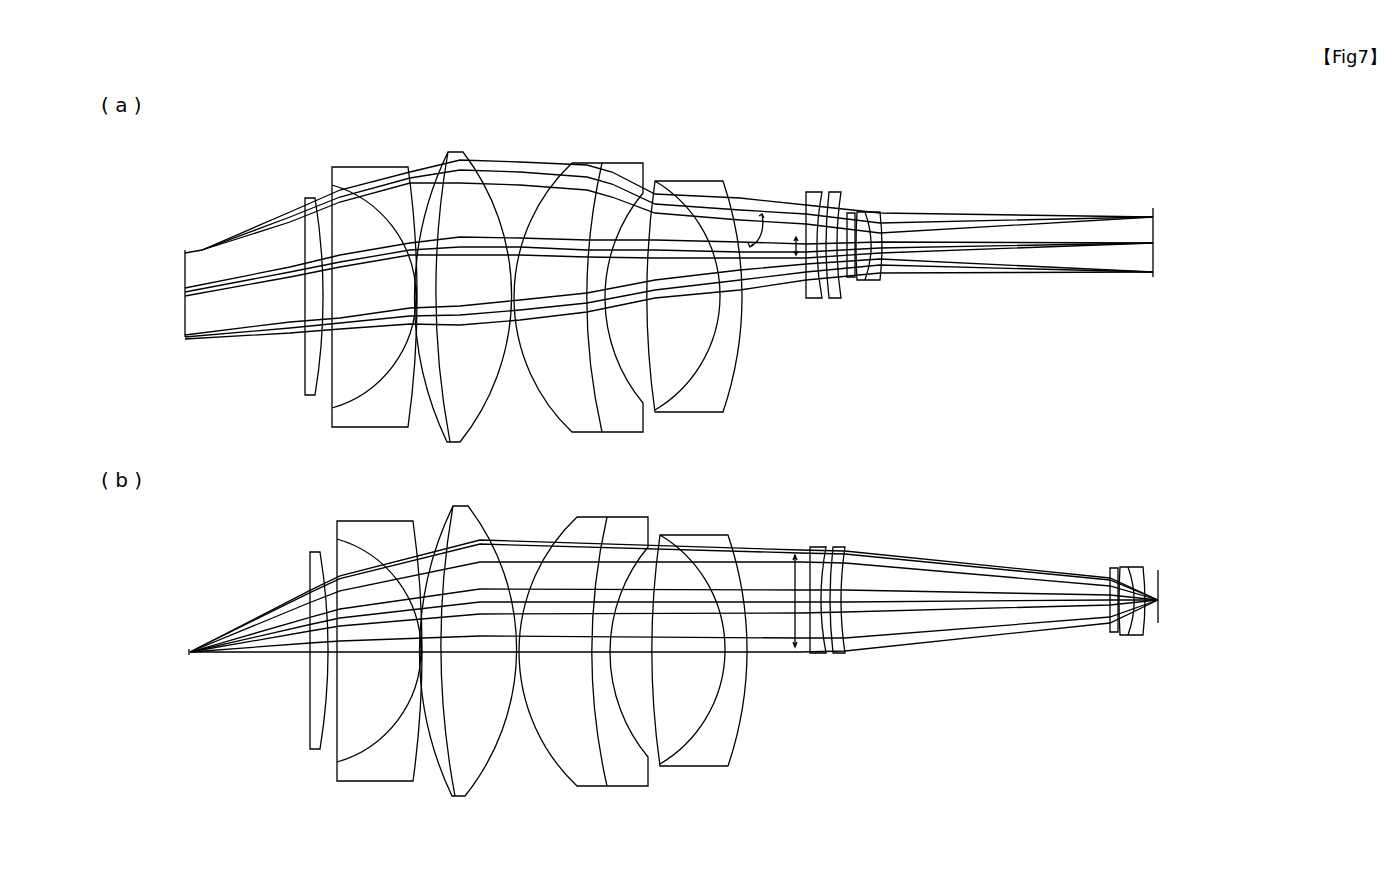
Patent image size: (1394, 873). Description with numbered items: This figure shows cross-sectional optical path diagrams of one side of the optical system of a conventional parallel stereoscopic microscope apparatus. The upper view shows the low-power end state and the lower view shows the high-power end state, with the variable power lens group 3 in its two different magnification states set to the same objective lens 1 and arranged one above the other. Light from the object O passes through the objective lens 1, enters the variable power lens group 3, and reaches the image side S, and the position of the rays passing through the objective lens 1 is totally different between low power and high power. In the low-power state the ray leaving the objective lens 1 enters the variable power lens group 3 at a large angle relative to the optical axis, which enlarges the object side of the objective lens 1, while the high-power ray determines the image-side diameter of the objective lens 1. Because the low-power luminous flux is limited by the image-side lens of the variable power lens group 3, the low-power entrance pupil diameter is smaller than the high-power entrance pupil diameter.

The objective lens 1 is at (742, 152).
The variable power lens group 3 is at (1175, 152).
The object plane O is at (186, 250).
The image plane (sensor) S is at (1153, 277).